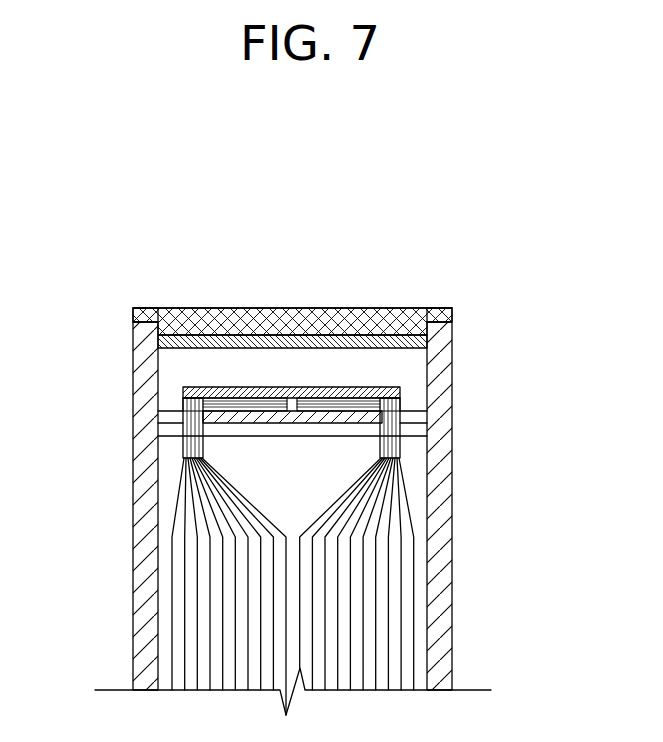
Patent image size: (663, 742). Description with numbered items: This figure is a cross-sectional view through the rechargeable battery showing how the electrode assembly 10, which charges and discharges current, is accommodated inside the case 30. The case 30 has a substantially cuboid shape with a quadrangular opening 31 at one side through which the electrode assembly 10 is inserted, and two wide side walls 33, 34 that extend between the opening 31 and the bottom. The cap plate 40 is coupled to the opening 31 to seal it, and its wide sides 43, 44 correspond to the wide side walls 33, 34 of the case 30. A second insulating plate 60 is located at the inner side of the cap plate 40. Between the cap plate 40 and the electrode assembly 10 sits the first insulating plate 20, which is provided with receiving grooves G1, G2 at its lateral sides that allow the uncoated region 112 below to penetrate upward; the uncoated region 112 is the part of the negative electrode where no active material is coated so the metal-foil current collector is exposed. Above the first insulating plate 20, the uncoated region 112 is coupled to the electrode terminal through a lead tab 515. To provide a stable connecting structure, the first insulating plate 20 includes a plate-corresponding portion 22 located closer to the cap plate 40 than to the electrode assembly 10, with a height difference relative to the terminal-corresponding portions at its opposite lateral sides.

The electrode assembly 10 is at (421, 577).
The first insulating plate 20 is at (287, 461).
The plate-corresponding portion 22 is at (342, 423).
The case 30 is at (298, 464).
The opening 31 is at (415, 320).
The wide side wall 33 is at (452, 628).
The wide side wall 34 is at (133, 625).
The cap plate 40 is at (237, 322).
The wide side 43 is at (452, 318).
The wide side 44 is at (133, 316).
The second insulating plate 60 is at (317, 340).
The uncoated region 112 is at (190, 448).
The lead tab 515 is at (198, 387).
The receiving groove G1 is at (420, 417).
The receiving groove G2 is at (165, 417).